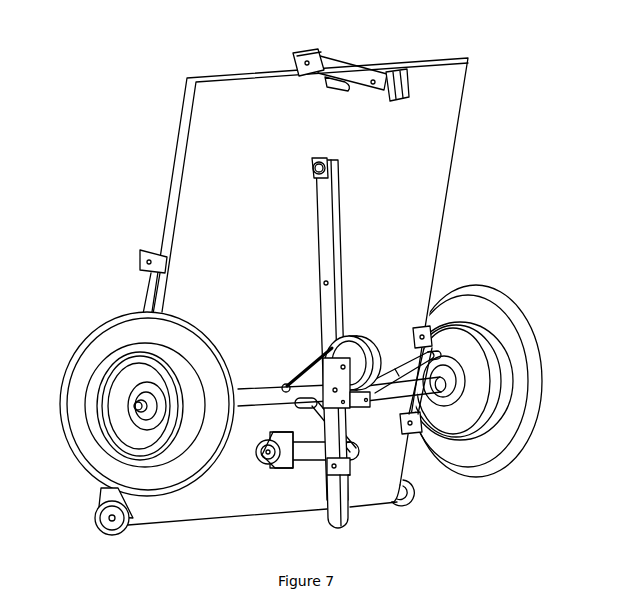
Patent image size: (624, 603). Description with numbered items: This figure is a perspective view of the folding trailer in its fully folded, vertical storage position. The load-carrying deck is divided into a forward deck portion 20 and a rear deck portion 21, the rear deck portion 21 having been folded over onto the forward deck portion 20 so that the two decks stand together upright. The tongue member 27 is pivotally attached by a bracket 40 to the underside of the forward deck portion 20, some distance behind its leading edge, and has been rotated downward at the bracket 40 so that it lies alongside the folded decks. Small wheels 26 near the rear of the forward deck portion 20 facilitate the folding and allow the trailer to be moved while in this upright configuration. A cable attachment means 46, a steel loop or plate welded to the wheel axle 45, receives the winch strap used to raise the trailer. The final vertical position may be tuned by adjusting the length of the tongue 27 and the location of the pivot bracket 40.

The forward deck portion 20 is at (172, 163).
The rear deck portion 21 is at (137, 290).
The small wheels 26 is at (128, 527).
The tongue member 27 is at (340, 252).
The bracket 40 is at (312, 168).
The wheel axle 45 is at (238, 390).
The cable attachment means 46 is at (280, 388).